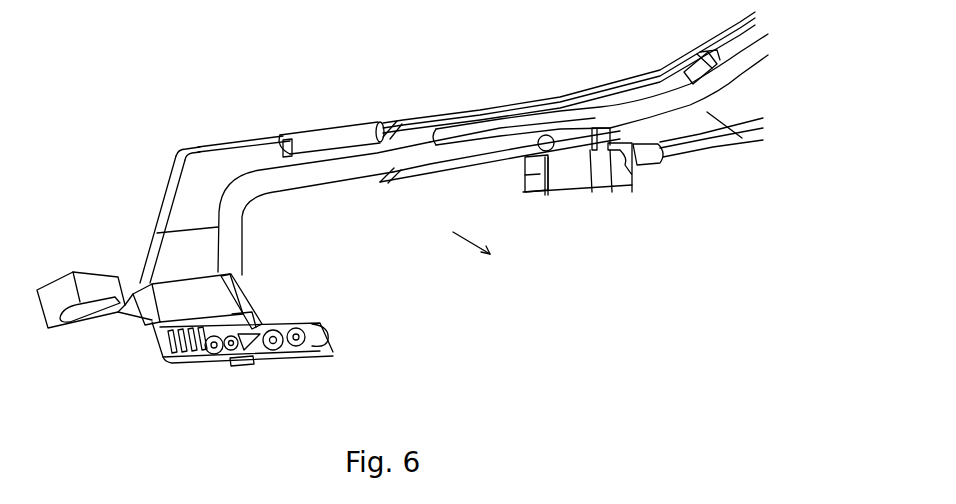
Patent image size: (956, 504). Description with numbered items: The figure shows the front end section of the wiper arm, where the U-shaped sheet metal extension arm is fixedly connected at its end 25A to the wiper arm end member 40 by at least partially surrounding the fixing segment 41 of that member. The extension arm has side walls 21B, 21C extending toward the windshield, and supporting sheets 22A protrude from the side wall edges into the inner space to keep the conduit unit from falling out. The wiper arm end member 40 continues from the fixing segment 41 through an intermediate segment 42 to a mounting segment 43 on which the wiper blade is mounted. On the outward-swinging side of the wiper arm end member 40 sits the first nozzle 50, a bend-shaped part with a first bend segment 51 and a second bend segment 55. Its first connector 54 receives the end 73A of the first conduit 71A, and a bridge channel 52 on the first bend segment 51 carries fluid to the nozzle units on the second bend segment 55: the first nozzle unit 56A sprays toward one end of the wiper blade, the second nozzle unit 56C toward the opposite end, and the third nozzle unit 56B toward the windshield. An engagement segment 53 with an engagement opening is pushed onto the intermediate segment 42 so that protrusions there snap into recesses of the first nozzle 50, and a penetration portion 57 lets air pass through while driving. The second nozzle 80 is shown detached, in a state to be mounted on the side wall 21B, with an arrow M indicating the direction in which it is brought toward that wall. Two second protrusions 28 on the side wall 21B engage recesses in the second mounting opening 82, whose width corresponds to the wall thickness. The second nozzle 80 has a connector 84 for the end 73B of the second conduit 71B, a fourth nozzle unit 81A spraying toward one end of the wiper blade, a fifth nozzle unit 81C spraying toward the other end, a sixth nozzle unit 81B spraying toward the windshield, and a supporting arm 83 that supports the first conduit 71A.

The wiper arm end member 40 is at (144, 160).
The fixing segment 41 is at (300, 162).
The intermediate segment 42 is at (160, 247).
The mounting segment 43 is at (112, 313).
The end 25A is at (330, 137).
The side wall 21C is at (641, 88).
The supporting sheet 22A is at (700, 62).
The end of first conduit 73A is at (230, 220).
The first conduit 71A is at (557, 118).
The second protrusion 28 is at (437, 182).
The end of second conduit 73B is at (560, 141).
The second conduit 71B is at (695, 147).
The side wall 21B is at (687, 148).
The second nozzle 80 is at (570, 182).
The fourth nozzle unit 81A is at (546, 162).
The sixth nozzle unit 81B is at (593, 158).
The fifth nozzle unit 81C is at (633, 162).
The second mounting opening 82 is at (527, 175).
The supporting arm 83 is at (607, 160).
The connector 84 is at (653, 162).
The direction M is at (479, 251).
The first nozzle 50 is at (333, 315).
The first bend segment 51 is at (163, 342).
The bridge channel 52 is at (252, 302).
The engagement segment 53 is at (175, 294).
The first connector 54 is at (233, 261).
The second bend segment 55 is at (248, 366).
The first nozzle unit 56A is at (216, 352).
The third nozzle unit 56B is at (299, 345).
The second nozzle unit 56C is at (327, 330).
The penetration portion 57 is at (177, 346).